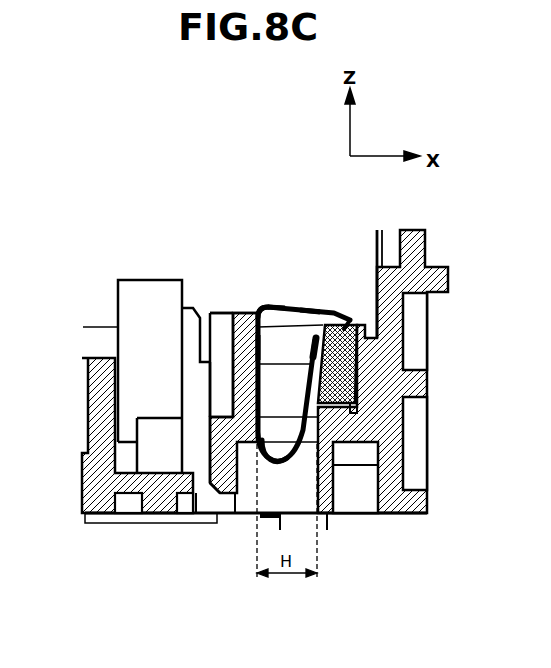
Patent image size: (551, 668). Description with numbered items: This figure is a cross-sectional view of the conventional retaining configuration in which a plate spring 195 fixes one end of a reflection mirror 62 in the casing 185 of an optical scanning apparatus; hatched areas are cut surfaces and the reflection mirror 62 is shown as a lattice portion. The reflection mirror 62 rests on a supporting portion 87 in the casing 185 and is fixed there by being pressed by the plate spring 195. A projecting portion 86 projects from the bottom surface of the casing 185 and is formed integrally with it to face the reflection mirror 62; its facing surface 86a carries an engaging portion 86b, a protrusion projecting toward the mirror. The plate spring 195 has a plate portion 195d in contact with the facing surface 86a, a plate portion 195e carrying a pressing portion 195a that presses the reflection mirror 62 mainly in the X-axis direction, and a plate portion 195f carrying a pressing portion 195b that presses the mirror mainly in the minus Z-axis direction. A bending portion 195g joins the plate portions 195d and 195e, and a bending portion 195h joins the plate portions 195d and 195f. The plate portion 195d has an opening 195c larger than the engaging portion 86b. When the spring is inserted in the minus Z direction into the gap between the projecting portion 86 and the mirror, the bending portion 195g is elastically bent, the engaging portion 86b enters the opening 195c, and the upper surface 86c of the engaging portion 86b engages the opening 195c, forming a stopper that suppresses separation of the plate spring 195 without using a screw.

The reflection mirror 62 is at (321, 315).
The projecting portion 86 is at (208, 417).
The facing surface 86a is at (217, 467).
The engaging portion 86b is at (273, 318).
The upper surface 86c is at (256, 341).
The supporting portion 87 is at (360, 430).
The casing 185 is at (88, 408).
The plate spring 195 is at (293, 310).
The pressing portion 195a is at (365, 355).
The pressing portion 195b is at (343, 312).
The opening 195c is at (257, 347).
The plate portion 195d is at (260, 304).
The plate portion 195e is at (362, 467).
The plate portion 195f is at (308, 310).
The bending portion 195g is at (285, 464).
The bending portion 195h is at (270, 305).